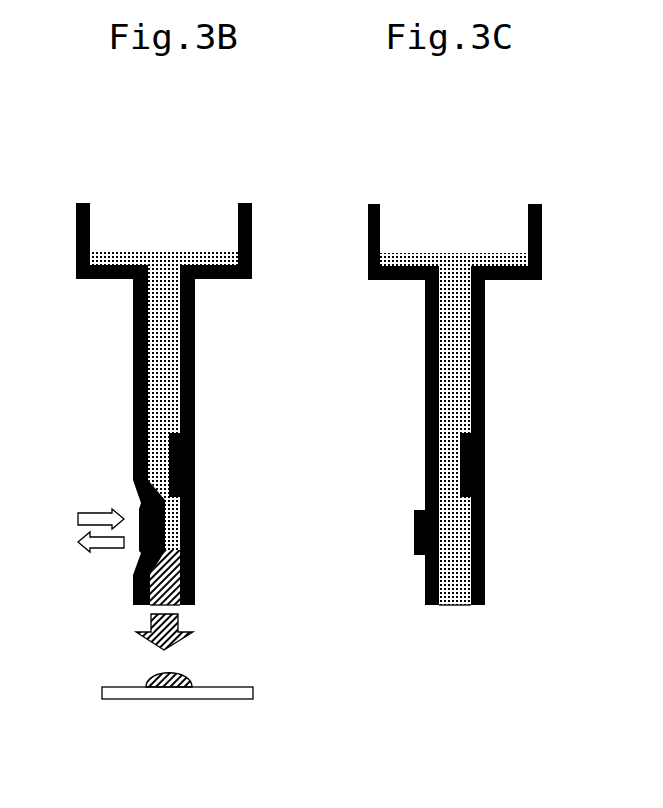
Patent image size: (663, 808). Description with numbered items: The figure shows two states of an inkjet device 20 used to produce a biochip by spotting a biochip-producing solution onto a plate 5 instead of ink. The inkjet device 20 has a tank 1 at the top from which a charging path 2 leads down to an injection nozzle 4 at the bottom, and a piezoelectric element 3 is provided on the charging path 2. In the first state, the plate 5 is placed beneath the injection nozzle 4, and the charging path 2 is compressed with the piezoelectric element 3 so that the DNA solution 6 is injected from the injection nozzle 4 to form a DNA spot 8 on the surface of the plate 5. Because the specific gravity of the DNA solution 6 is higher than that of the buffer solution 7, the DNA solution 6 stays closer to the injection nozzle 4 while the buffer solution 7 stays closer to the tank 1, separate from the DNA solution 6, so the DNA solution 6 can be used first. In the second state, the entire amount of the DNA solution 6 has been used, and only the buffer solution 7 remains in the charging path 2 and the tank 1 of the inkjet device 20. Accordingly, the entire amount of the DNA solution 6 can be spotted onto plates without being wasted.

In FIG. 3B, the tank 1 is at (78, 229).
In FIG. 3C, the tank 1 is at (368, 222).
In FIG. 3B, the charging path 2 is at (157, 470).
In FIG. 3C, the charging path 2 is at (450, 470).
In FIG. 3B, the piezoelectric element 3 is at (139, 548).
In FIG. 3C, the piezoelectric element 3 is at (414, 540).
In FIG. 3B, the injection nozzle 4 is at (175, 607).
In FIG. 3C, the injection nozzle 4 is at (466, 607).
In FIG. 3B, the plate 5 is at (253, 695).
In FIG. 3B, the DNA solution 6 is at (195, 562).
In FIG. 3B, the buffer solution 7 is at (173, 262).
In FIG. 3C, the buffer solution 7 is at (466, 262).
In FIG. 3B, the DNA spot 8 is at (145, 678).
In FIG. 3B, the inkjet device 20 is at (76, 365).
In FIG. 3C, the inkjet device 20 is at (370, 352).